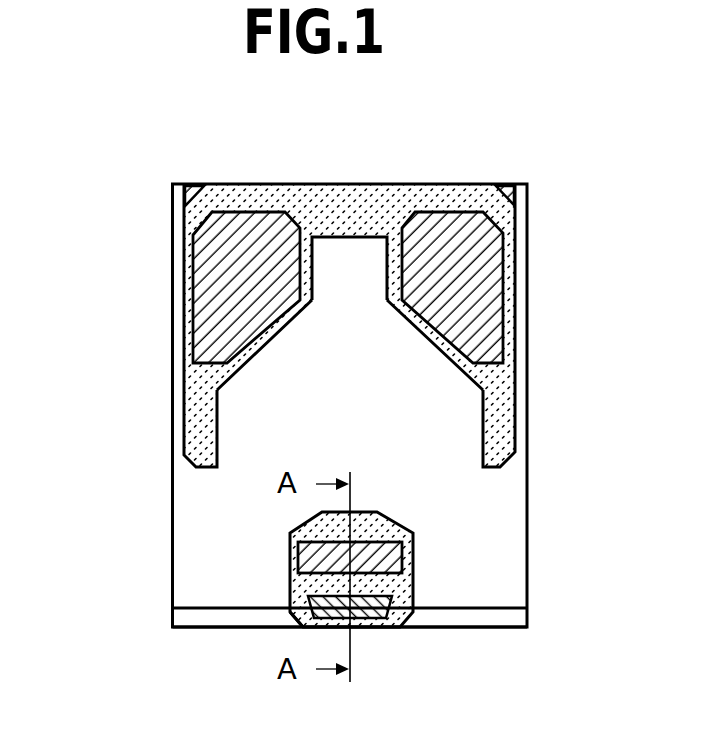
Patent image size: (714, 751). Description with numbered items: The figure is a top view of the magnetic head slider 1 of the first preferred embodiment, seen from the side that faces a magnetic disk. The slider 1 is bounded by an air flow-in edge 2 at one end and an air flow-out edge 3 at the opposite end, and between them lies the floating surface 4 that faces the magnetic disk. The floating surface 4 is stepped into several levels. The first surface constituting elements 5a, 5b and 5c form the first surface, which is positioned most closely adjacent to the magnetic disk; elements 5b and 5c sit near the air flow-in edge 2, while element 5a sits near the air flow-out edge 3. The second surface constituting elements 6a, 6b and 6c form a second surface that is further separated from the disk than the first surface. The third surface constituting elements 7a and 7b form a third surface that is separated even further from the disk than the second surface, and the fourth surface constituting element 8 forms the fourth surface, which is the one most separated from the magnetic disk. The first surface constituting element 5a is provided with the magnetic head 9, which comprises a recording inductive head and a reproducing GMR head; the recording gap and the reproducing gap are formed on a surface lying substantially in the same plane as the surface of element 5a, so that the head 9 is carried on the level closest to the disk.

The magnetic head slider 1 is at (136, 332).
The air flow-in edge 2 is at (360, 184).
The air flow-out edge 3 is at (437, 630).
The floating surface 4 is at (437, 427).
The first surface constituting element 5a is at (291, 628).
The first surface constituting element 5b is at (172, 190).
The first surface constituting element 5c is at (516, 190).
The second surface constituting element 6a is at (413, 547).
The second surface constituting element 6b is at (228, 275).
The second surface constituting element 6c is at (470, 274).
The third surface constituting element 7a is at (297, 582).
The third surface constituting element 7b is at (200, 389).
The fourth surface constituting element 8 is at (350, 360).
The magnetic head 9 is at (362, 630).